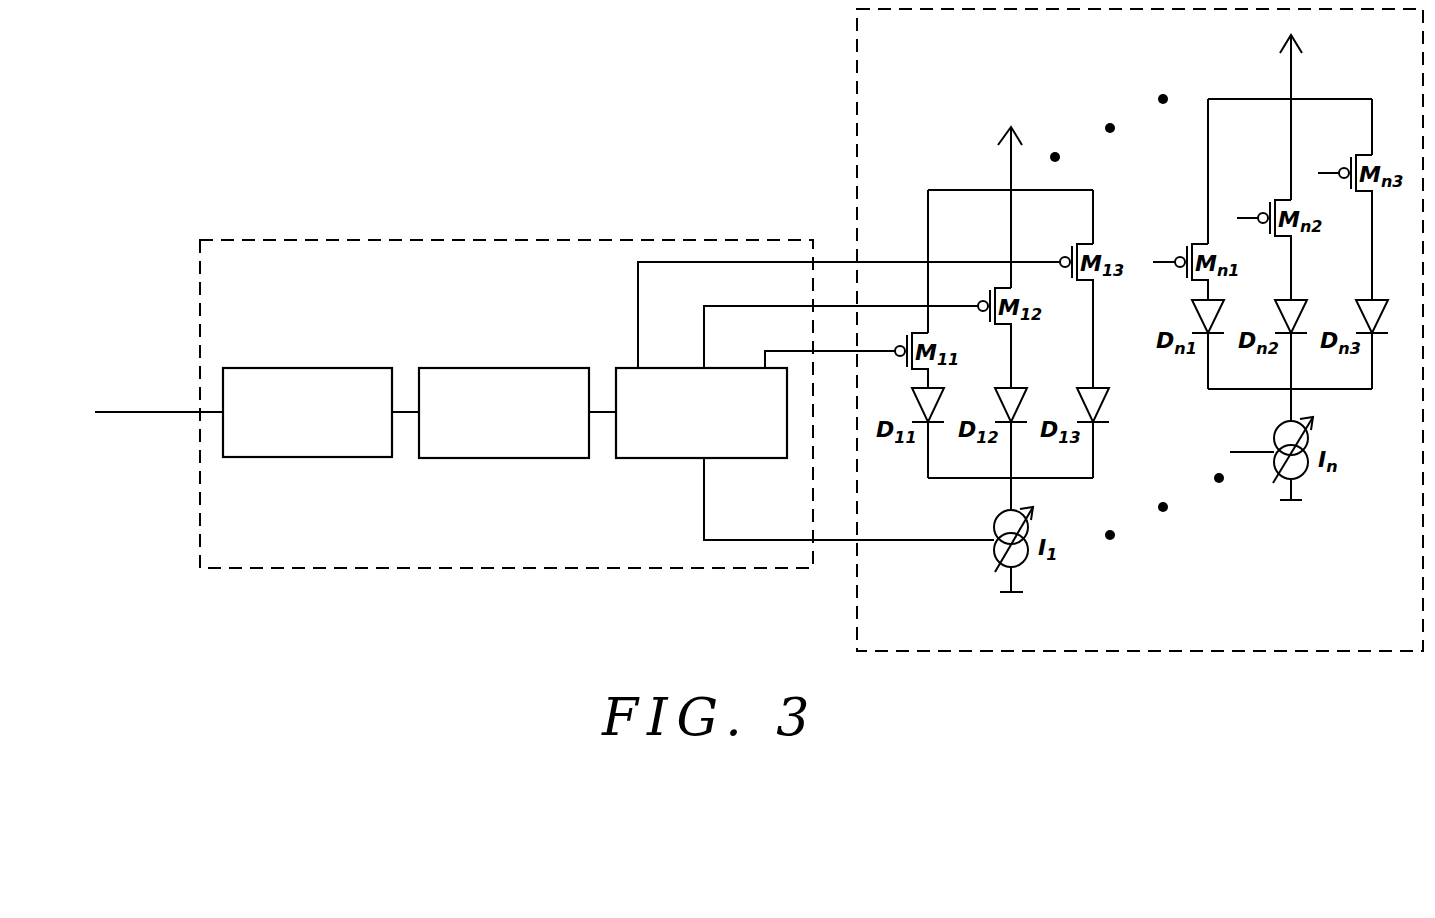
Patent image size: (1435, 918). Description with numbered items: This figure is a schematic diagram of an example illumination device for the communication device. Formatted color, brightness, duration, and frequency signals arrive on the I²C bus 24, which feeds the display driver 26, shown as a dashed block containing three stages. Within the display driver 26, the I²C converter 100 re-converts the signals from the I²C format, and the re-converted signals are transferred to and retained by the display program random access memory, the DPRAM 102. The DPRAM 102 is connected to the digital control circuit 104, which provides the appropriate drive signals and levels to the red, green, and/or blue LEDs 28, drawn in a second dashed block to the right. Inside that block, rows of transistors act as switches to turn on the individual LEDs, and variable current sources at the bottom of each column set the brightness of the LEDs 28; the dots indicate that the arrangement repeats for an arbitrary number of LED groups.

The I²C bus 24 is at (133, 414).
The display driver 26 is at (288, 240).
The red, green, and/or blue LEDs 28 is at (857, 76).
The I²C converter 100 is at (268, 368).
The display program random access memory (DPRAM) 102 is at (462, 368).
The digital control circuit 104 is at (633, 458).